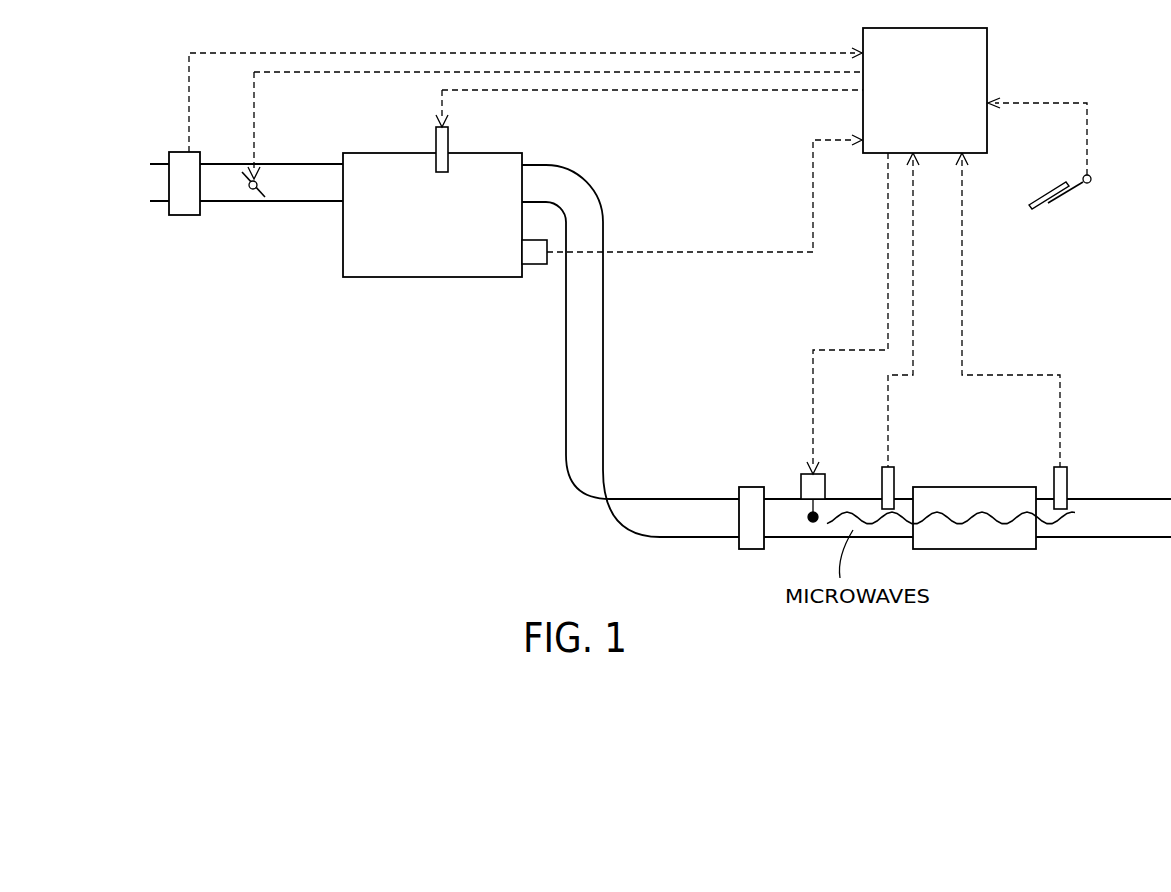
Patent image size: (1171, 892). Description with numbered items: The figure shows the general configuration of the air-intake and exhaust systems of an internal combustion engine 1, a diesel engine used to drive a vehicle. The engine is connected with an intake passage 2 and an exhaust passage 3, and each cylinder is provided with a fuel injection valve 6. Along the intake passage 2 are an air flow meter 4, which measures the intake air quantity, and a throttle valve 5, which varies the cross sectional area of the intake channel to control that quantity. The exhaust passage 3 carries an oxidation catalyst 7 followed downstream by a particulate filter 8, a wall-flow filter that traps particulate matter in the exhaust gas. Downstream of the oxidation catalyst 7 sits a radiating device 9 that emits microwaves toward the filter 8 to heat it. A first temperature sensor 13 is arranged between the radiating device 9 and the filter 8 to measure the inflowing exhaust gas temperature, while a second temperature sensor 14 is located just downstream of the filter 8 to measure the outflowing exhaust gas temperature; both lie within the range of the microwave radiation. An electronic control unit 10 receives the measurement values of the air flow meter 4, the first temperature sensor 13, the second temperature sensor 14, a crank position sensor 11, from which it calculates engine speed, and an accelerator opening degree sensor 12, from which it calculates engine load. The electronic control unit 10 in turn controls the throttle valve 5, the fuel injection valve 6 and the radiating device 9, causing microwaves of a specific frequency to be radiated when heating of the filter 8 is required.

The internal combustion engine 1 is at (430, 278).
The intake passage 2 is at (305, 203).
The exhaust passage 3 is at (606, 326).
The air flow meter 4 is at (185, 216).
The throttle valve 5 is at (252, 190).
The fuel injection valve 6 is at (435, 137).
The oxidation catalyst 7 is at (750, 487).
The particulate filter 8 is at (975, 487).
The radiating device 9 is at (801, 482).
The electronic control unit 10 is at (987, 71).
The crank position sensor 11 is at (535, 265).
The accelerator opening degree sensor 12 is at (1087, 185).
The first temperature sensor 13 is at (881, 480).
The second temperature sensor 14 is at (1068, 481).